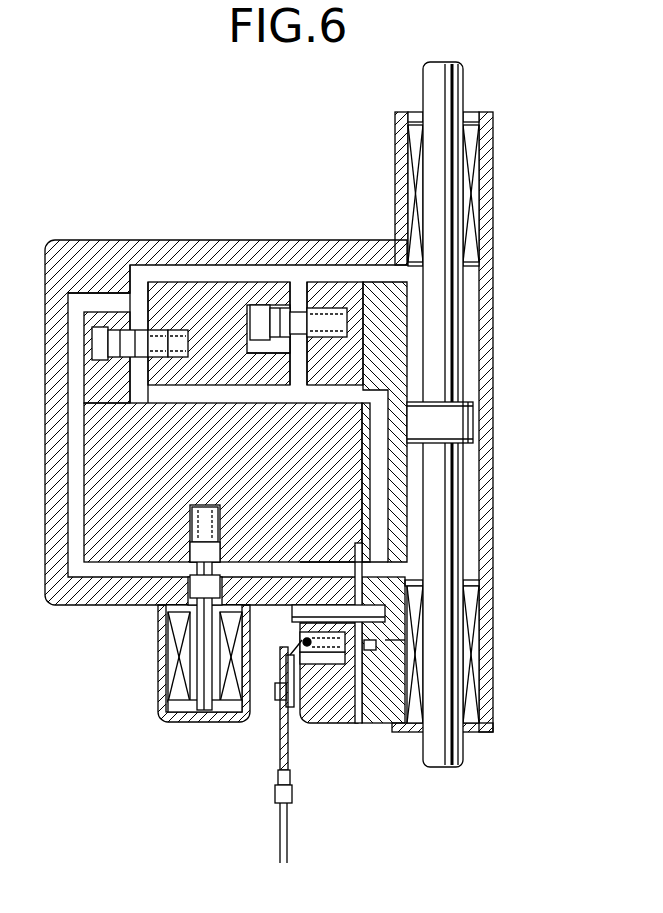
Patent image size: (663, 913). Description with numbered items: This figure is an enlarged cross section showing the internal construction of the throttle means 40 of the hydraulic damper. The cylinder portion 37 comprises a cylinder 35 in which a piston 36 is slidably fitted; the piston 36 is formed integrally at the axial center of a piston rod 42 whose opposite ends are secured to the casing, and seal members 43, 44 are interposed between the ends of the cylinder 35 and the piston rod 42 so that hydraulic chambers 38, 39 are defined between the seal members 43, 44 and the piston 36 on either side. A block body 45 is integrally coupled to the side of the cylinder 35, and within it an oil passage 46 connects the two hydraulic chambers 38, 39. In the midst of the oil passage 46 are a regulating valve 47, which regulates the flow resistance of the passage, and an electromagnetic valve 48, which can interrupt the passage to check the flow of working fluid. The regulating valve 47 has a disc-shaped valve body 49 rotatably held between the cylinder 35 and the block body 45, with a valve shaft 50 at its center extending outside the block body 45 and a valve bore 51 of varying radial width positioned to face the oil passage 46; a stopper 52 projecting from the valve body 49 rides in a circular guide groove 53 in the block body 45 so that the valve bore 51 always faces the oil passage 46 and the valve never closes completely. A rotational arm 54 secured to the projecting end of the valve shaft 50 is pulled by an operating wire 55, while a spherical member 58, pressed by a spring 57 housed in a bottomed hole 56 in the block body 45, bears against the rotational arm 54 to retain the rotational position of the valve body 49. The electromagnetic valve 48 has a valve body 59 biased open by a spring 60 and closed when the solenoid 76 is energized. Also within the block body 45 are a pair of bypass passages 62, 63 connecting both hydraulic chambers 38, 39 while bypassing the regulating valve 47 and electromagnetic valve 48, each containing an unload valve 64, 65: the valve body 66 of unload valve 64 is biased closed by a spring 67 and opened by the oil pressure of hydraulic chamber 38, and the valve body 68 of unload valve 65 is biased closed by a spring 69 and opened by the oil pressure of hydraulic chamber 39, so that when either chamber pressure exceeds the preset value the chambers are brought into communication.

The cylinder 35 is at (489, 372).
The piston 36 is at (470, 425).
The cylinder portion 37 is at (495, 673).
The hydraulic chamber 38 is at (470, 502).
The hydraulic chamber 39 is at (470, 327).
The throttle means 40 is at (149, 232).
The piston rod 42 is at (452, 545).
The seal member 43 is at (470, 638).
The seal member 44 is at (479, 207).
The block body 45 is at (101, 606).
The oil passage 46 is at (77, 451).
The regulating valve 47 is at (380, 640).
The electromagnetic valve 48 is at (190, 550).
The valve body 49 is at (380, 655).
The valve shaft 50 is at (315, 612).
The valve bore 51 is at (378, 633).
The stopper 52 is at (383, 650).
The guide groove 53 is at (329, 673).
The rotational arm 54 is at (286, 668).
The operating wire 55 is at (280, 748).
The bottomed hole 56 is at (322, 667).
The spring 57 is at (338, 601).
The spherical member 58 is at (300, 640).
The valve body 59 is at (190, 590).
The spring 60 is at (219, 524).
The bypass passage 62 is at (299, 380).
The bypass passage 63 is at (132, 368).
The unload valve 64 is at (300, 282).
The unload valve 65 is at (129, 313).
The valve body 66 is at (303, 342).
The spring 67 is at (347, 325).
The valve body 68 is at (163, 327).
The spring 69 is at (182, 329).
The solenoid 76 is at (158, 677).